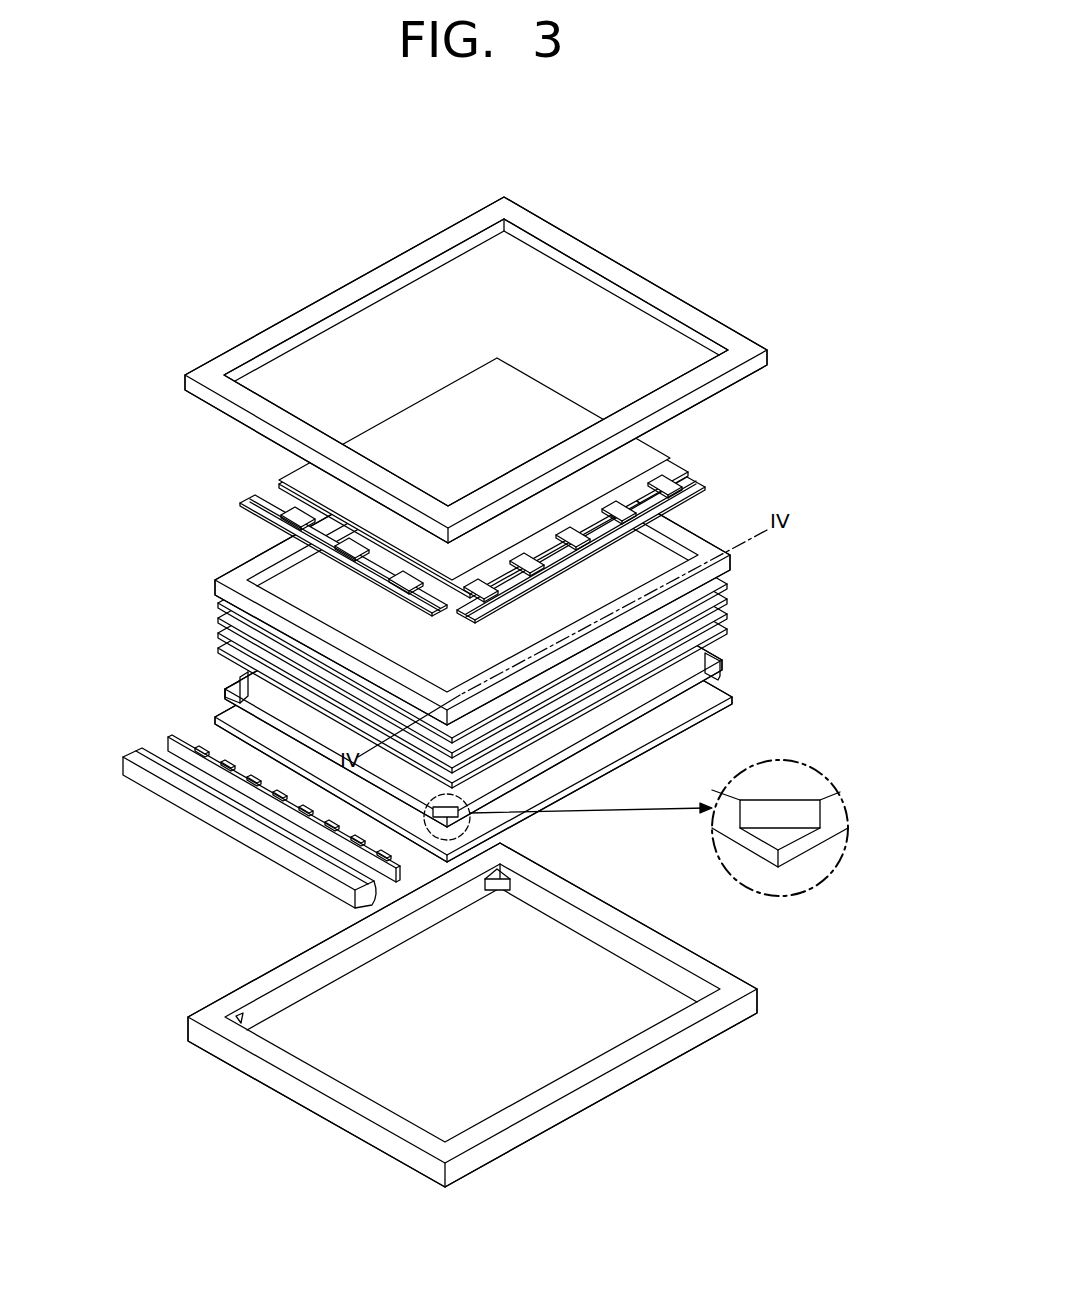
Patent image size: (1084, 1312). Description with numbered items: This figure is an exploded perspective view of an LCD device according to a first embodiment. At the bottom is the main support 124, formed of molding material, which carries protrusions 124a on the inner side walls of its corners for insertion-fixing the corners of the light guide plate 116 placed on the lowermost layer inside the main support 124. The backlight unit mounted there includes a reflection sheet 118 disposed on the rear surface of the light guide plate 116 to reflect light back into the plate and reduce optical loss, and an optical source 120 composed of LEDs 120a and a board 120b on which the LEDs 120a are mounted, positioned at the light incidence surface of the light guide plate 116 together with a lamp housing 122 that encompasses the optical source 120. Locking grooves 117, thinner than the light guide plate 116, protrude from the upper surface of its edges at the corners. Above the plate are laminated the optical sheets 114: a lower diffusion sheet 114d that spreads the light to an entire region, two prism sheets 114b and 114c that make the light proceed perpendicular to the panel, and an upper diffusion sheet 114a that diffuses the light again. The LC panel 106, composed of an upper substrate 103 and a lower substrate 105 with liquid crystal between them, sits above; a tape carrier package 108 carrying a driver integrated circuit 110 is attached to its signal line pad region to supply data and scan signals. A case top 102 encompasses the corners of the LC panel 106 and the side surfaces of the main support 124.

The case top 102 is at (672, 308).
The upper substrate 103 is at (638, 455).
The lower substrate 105 is at (670, 463).
The LC panel 106 is at (577, 478).
The tape carrier package 108 is at (298, 513).
The driver integrated circuit 110 is at (265, 512).
The optical sheets 114 is at (545, 604).
The upper diffusion sheet 114a is at (732, 556).
The prism sheet 114b is at (730, 587).
The prism sheet 114c is at (730, 603).
The lower diffusion sheet 114d is at (730, 619).
The light guide plate 116 is at (575, 712).
The locking groove 117 is at (722, 665).
The reflection sheet 118 is at (693, 720).
The optical source 120 is at (258, 741).
The LEDs 120a is at (202, 745).
The board 120b is at (172, 737).
The lamp housing 122 is at (123, 755).
The main support 124 is at (637, 935).
The protrusion 124a is at (498, 868).